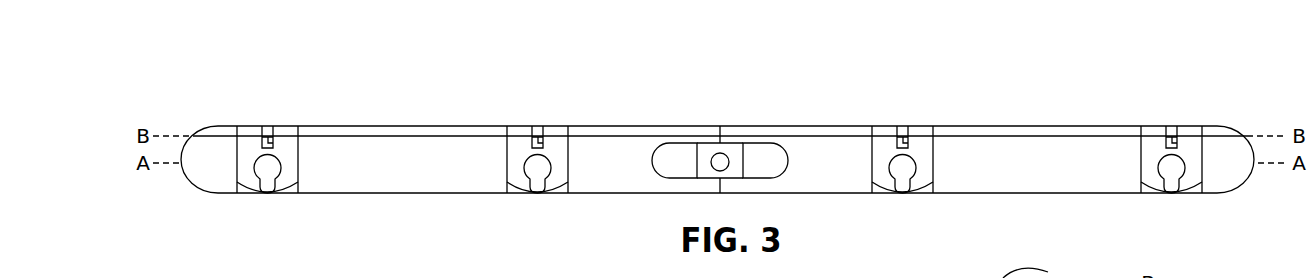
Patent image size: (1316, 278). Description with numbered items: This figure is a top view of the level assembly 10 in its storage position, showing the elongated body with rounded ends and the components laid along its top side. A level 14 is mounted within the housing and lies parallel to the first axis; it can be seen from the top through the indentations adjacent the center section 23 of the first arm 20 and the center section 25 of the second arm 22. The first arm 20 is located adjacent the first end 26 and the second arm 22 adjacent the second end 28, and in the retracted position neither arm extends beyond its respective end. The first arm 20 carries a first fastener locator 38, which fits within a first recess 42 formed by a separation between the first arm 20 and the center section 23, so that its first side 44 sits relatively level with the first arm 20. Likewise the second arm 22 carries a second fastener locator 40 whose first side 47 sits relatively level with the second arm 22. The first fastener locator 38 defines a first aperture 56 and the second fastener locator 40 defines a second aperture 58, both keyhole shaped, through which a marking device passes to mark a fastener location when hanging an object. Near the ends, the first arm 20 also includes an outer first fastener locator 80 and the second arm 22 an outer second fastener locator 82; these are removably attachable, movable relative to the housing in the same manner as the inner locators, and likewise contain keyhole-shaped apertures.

The level assembly 10 is at (1013, 63).
The level 14 is at (728, 153).
The first arm 20 is at (348, 152).
The second arm 22 is at (1060, 175).
The center section 23 is at (690, 140).
The center section 25 is at (750, 140).
The first end 26 is at (187, 178).
The second end 28 is at (1250, 180).
The first fastener locator 38 is at (556, 140).
The second fastener locator 40 is at (877, 146).
The first recess 42 is at (497, 185).
The first side 44 is at (517, 148).
The first side 47 is at (926, 148).
The first aperture 56 is at (536, 172).
The second aperture 58 is at (905, 170).
The outer first fastener locator 80 is at (281, 147).
The outer second fastener locator 82 is at (1152, 139).